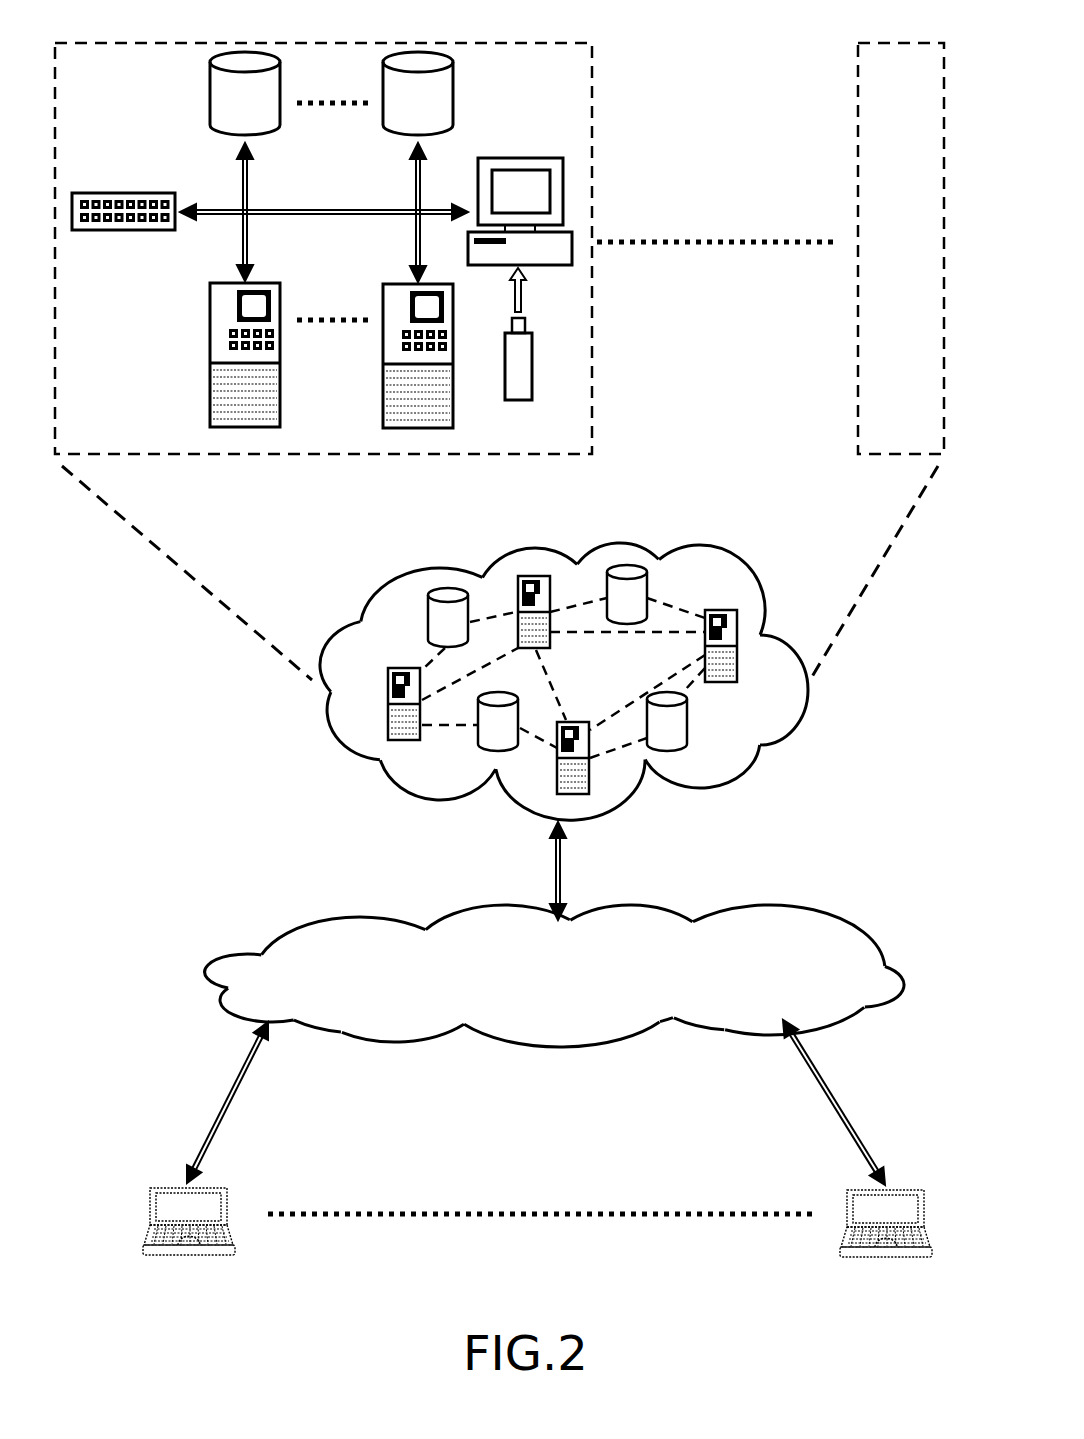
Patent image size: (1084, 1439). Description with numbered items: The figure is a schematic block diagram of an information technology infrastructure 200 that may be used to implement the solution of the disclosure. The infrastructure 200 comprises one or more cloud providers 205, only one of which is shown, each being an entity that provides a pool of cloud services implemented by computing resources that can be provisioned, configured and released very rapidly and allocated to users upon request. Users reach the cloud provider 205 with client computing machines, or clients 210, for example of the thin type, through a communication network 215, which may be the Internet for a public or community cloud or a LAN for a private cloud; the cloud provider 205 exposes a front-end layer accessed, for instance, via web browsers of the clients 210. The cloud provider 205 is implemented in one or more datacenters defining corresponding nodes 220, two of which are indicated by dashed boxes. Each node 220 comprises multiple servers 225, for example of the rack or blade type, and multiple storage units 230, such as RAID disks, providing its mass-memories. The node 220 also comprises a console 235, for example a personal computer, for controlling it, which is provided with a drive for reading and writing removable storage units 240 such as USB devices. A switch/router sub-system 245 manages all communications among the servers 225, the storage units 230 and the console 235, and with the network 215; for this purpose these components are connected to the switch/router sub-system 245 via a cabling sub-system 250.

The information technology infrastructure 200 is at (210, 778).
The cloud provider 205 is at (725, 768).
The client 210 is at (190, 1256).
The network 215 is at (283, 930).
The node 220 is at (337, 43).
The server 225 is at (210, 392).
The storage unit 230 is at (210, 110).
The console 235 is at (490, 158).
The removable storage unit 240 is at (532, 355).
The switch/router sub-system 245 is at (90, 232).
The cabling sub-system 250 is at (297, 214).